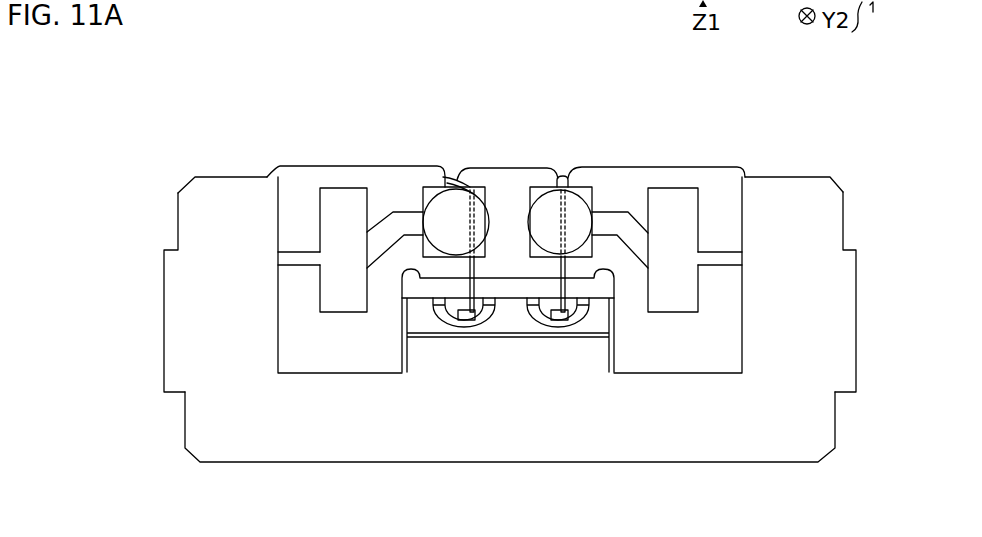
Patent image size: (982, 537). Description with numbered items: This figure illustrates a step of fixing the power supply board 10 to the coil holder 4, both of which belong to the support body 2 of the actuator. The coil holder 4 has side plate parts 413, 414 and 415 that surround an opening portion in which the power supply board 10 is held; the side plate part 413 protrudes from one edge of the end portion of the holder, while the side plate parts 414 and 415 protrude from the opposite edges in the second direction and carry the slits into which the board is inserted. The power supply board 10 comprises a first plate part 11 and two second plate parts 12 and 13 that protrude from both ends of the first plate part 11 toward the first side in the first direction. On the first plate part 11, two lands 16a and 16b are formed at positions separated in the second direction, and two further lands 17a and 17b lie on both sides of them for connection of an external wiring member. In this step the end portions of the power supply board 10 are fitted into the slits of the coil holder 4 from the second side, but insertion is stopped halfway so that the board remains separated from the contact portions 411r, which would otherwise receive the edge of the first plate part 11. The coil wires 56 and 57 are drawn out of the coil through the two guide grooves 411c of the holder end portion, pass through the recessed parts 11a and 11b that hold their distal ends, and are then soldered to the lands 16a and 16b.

The support body 2 is at (488, 134).
The coil holder 4 is at (201, 177).
The power supply board 10 is at (640, 167).
The first plate part 11 is at (512, 188).
The recessed part 11a is at (558, 178).
The recessed part 11b is at (446, 178).
The second plate part 12 is at (713, 323).
The second plate part 13 is at (385, 307).
The land 16a is at (581, 189).
The land 16b is at (440, 190).
The land 17a is at (680, 188).
The land 17b is at (335, 198).
The coil wire 56 is at (576, 264).
The coil wire 57 is at (482, 260).
The contact portion 411r is at (506, 298).
The guide groove 411c is at (458, 320).
The side plate part 413 is at (763, 442).
The side plate part 414 is at (834, 287).
The side plate part 415 is at (182, 288).